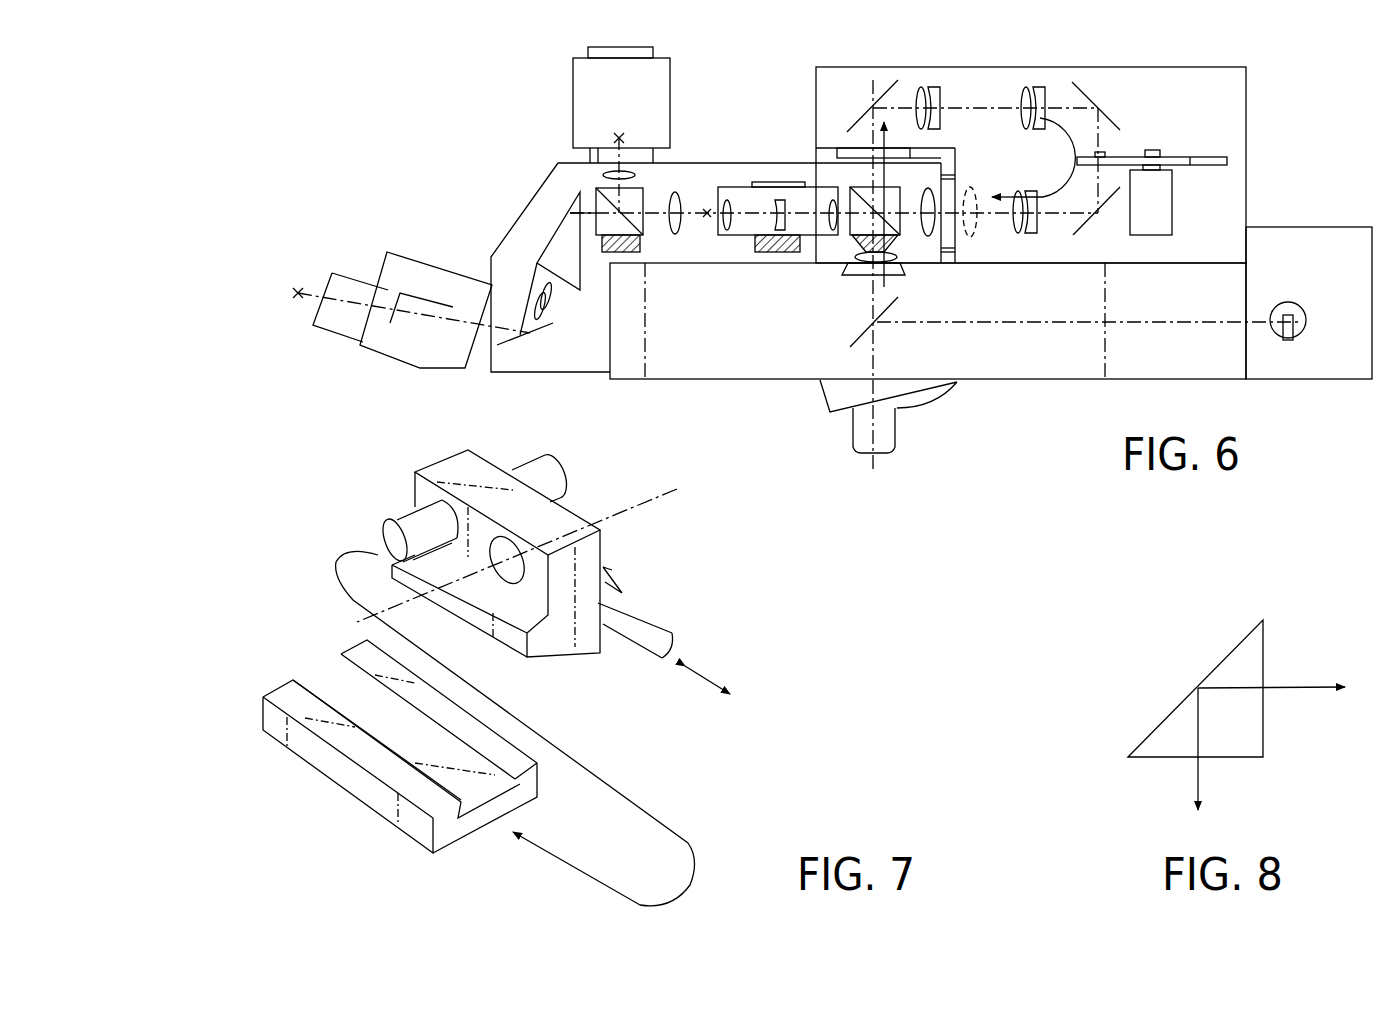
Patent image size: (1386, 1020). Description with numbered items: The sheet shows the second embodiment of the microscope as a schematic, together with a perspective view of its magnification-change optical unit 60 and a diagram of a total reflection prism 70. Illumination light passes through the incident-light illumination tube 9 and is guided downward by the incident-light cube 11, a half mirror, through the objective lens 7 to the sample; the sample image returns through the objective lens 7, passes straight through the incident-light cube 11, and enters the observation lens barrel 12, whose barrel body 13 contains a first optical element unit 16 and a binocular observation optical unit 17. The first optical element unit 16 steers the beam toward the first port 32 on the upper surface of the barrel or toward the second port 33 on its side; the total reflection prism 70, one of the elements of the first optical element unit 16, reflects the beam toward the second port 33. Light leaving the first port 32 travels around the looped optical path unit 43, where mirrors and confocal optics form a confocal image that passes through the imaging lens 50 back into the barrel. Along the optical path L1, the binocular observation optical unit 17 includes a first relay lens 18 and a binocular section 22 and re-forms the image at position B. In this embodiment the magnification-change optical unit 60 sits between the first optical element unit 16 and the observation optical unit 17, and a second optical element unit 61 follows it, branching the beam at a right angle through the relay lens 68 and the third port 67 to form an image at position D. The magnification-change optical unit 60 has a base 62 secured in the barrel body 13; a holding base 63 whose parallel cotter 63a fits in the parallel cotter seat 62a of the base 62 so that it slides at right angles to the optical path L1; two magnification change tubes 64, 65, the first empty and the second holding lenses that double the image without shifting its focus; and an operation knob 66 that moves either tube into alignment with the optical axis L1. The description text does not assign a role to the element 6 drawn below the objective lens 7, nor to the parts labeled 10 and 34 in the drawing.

In FIG. 6, the looped optical path unit 43 is at (1250, 107).
In FIG. 6, the observation lens barrel 12 is at (747, 148).
In FIG. 6, the incident-light illumination tube 9 is at (1042, 375).
In FIG. 6, the shaft 10 is at (1302, 327).
In FIG. 6, the camera 34 is at (668, 66).
In FIG. 6, the image position D is at (625, 138).
In FIG. 6, the relay lens 68 is at (604, 177).
In FIG. 6, the third port 67 is at (595, 161).
In FIG. 6, the second optical element unit 61 is at (647, 253).
In FIG. 6, the first relay lens 18 is at (678, 187).
In FIG. 6, the binocular observation optical unit 17 is at (538, 215).
In FIG. 6, the binocular section 22 is at (417, 273).
In FIG. 6, the image position B is at (299, 292).
In FIG. 6, the barrel body 13 is at (790, 185).
In FIG. 6, the magnification-change optical unit 60 is at (740, 251).
In FIG. 7, the magnification-change optical unit 60 is at (733, 768).
In FIG. 6, the first port 32 is at (838, 158).
In FIG. 6, the first optical element unit 16 is at (862, 187).
In FIG. 6, the second port 33 is at (948, 200).
In FIG. 6, the imaging lens 50 is at (929, 240).
In FIG. 6, the incident-light cube 11 is at (858, 330).
In FIG. 6, the objective lens 6 is at (835, 390).
In FIG. 6, the objective lens 7 is at (885, 430).
In FIG. 7, the holding base 63 is at (550, 660).
In FIG. 7, the parallel cotter 63a is at (593, 640).
In FIG. 7, the magnification change tube 64 is at (508, 563).
In FIG. 7, the magnification change tube 65 is at (390, 528).
In FIG. 7, the operation knob 66 is at (650, 633).
In FIG. 7, the optical path L1 is at (677, 520).
In FIG. 7, the base 62 is at (522, 800).
In FIG. 7, the parallel cotter seat 62a is at (477, 793).
In FIG. 8, the total reflection prism 70 is at (1263, 633).